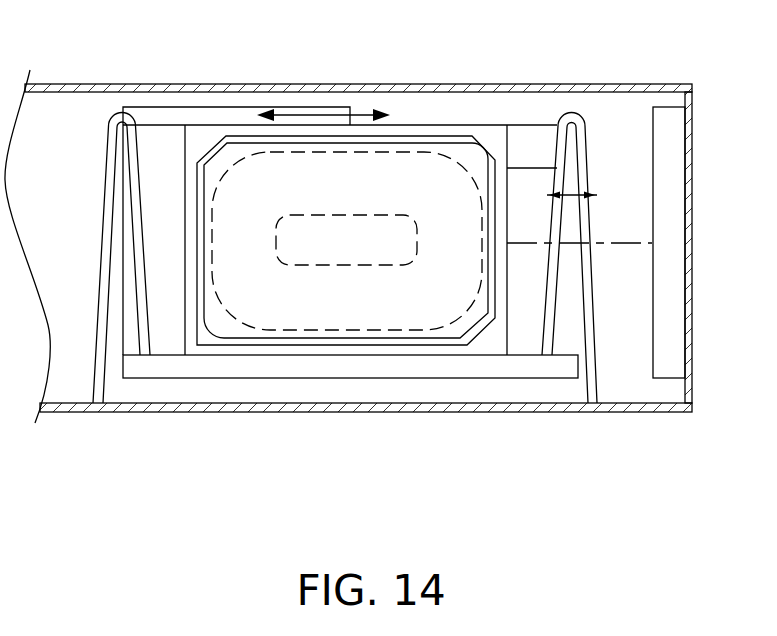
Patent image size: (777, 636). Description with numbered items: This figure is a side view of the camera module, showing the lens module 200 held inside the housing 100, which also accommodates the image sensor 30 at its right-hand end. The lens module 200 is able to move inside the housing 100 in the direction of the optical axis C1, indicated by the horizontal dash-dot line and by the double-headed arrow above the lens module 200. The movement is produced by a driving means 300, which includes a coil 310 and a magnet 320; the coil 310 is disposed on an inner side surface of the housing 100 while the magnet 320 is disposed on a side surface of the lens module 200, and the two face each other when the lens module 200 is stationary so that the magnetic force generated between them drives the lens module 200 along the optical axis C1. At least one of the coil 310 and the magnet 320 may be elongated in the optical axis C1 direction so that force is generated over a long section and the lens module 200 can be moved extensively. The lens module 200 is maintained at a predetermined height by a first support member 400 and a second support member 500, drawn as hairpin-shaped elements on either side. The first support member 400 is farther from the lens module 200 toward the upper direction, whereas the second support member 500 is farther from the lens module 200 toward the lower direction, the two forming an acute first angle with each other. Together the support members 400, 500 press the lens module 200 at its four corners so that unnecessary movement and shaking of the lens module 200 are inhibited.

The housing 100 is at (463, 84).
The image sensor 30 is at (668, 120).
The lens module 200 is at (417, 124).
The driving means 300 is at (350, 330).
The coil 310 is at (395, 330).
The magnet 320 is at (452, 327).
The first support member 400 is at (548, 322).
The second support member 500 is at (595, 327).
The optical axis C1 is at (630, 242).